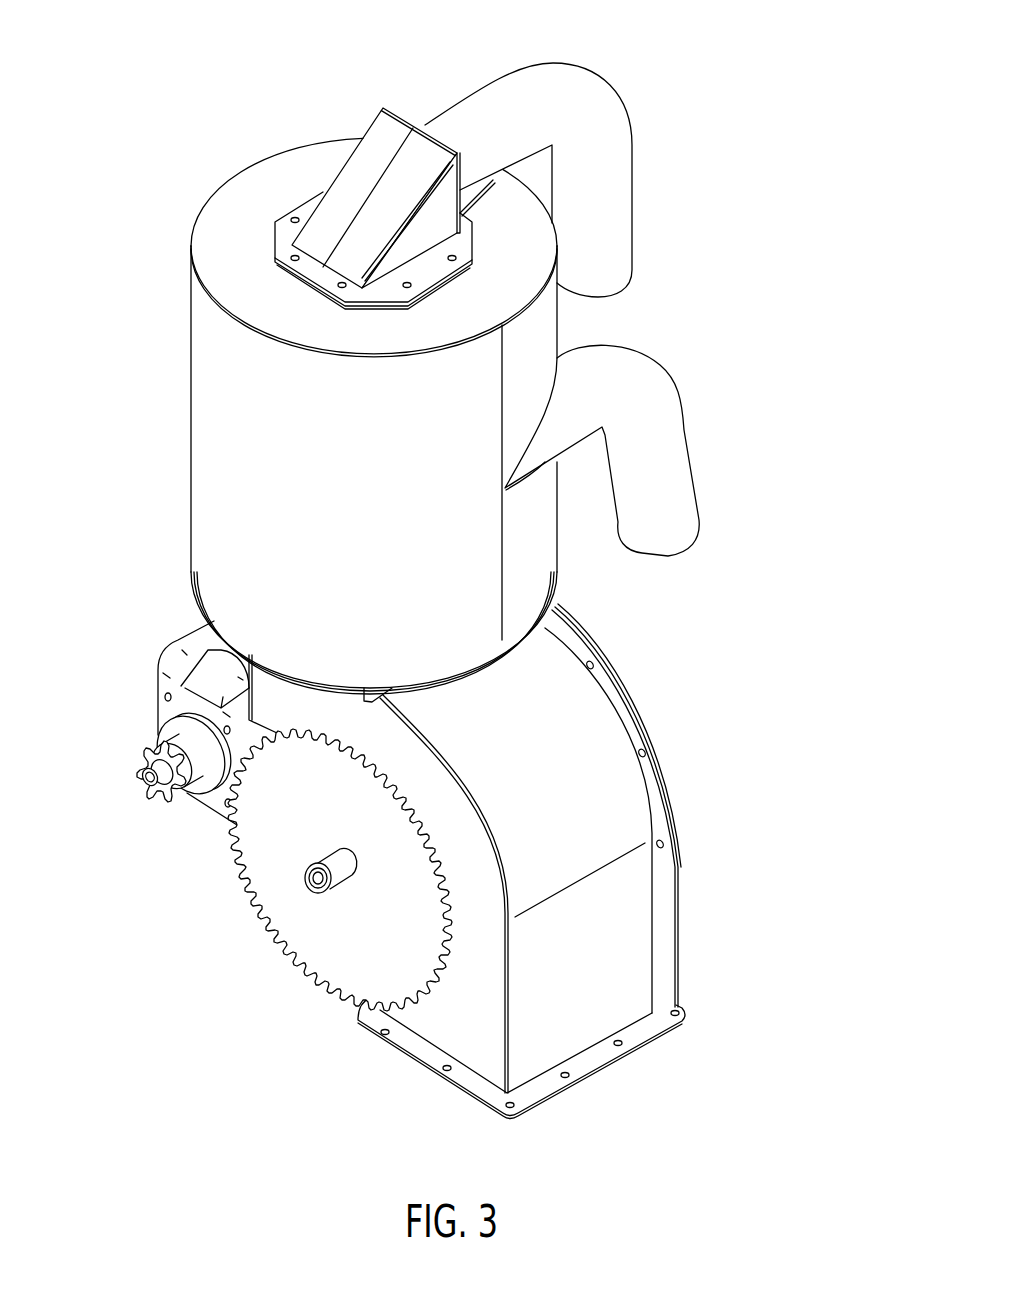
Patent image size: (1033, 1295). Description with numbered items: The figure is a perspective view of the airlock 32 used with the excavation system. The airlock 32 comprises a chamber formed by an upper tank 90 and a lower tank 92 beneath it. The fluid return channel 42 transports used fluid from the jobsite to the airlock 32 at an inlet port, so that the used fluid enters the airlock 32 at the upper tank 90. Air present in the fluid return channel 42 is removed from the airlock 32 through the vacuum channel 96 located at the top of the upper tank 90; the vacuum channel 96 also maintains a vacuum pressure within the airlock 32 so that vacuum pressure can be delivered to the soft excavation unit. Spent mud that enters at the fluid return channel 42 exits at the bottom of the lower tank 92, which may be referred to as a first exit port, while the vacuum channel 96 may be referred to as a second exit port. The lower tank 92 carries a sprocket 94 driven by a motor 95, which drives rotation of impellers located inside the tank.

The airlock 32 is at (718, 198).
The fluid return channel 42 is at (687, 435).
The upper tank 90 is at (240, 402).
The lower tank 92 is at (582, 750).
The sprocket 94 is at (283, 898).
The motor 95 is at (173, 727).
The vacuum channel 96 is at (605, 82).